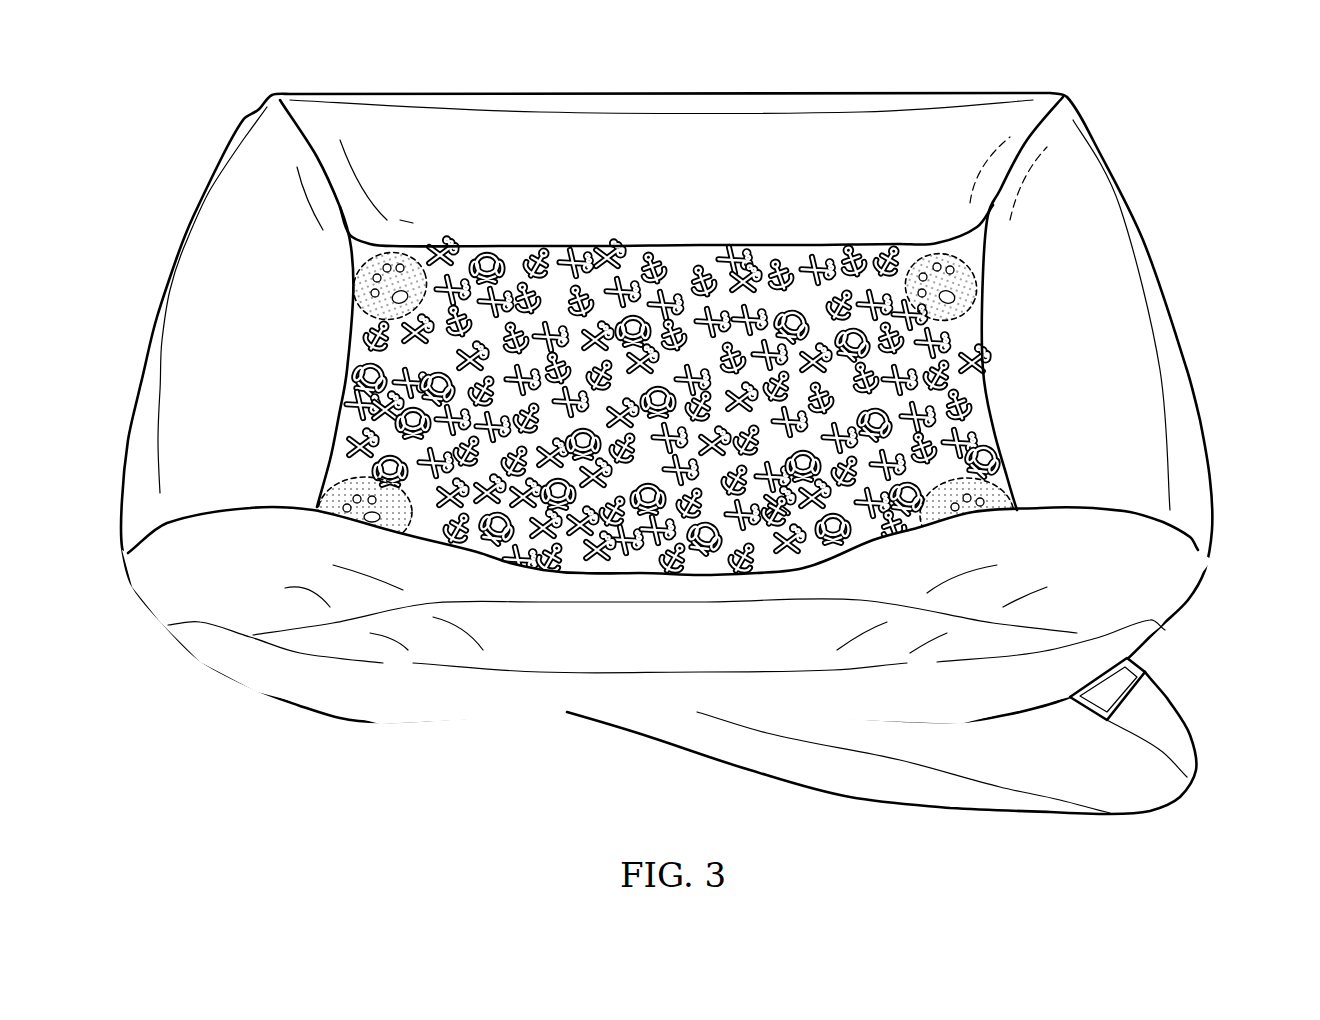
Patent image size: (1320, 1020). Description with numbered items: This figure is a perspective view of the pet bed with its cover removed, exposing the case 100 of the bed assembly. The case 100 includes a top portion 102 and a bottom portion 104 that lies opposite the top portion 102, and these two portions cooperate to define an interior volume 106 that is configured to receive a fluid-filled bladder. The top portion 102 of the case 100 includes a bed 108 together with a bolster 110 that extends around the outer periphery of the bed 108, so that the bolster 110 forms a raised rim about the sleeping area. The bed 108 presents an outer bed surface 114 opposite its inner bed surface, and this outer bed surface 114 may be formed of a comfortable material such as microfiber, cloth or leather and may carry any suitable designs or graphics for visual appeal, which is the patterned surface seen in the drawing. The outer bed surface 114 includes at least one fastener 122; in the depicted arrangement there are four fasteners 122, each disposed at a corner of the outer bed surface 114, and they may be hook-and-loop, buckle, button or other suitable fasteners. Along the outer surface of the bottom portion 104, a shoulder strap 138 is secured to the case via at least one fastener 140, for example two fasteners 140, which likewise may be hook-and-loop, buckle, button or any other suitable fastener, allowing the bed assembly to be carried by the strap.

The case 100 is at (1210, 98).
The top portion 102 is at (1087, 80).
The bottom portion 104 is at (553, 753).
The interior volume 106 is at (1100, 312).
The bed 108 is at (675, 386).
The bolster 110 is at (230, 233).
The outer bed surface 114 is at (738, 323).
The fastener 122 is at (367, 293).
The shoulder strap 138 is at (907, 788).
The fastener 140 is at (1130, 660).